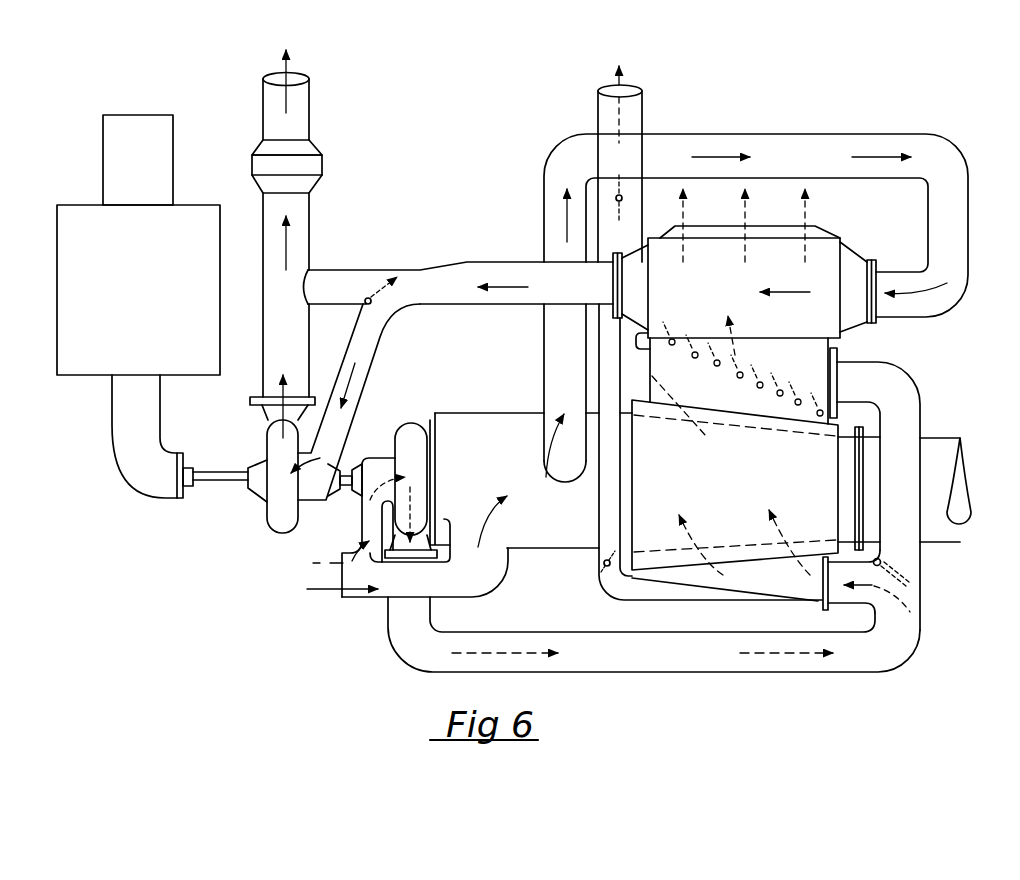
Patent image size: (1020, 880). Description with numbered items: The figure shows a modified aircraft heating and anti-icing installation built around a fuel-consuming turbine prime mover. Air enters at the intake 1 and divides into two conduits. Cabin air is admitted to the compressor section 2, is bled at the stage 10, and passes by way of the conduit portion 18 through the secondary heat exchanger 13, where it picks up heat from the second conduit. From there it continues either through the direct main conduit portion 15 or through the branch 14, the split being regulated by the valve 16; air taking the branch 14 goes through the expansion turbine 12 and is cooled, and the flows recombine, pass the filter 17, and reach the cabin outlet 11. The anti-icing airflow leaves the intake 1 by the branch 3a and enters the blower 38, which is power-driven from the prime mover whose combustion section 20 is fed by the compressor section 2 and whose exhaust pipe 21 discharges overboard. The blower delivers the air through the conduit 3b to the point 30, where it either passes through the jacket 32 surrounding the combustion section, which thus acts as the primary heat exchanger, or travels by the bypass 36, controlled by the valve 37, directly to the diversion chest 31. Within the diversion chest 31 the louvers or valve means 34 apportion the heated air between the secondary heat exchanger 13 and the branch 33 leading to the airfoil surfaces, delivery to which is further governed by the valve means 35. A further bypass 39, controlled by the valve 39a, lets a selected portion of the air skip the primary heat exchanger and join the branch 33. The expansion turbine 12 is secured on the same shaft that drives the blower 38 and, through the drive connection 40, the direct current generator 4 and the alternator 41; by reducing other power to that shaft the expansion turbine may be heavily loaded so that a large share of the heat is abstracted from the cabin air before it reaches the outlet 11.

The intake 1 is at (345, 592).
The compressor section 2 is at (482, 457).
The branch 3a is at (362, 533).
The conduit 3b is at (712, 673).
The direct current generator 4 is at (117, 284).
The bleed stage 10 is at (563, 478).
The outlet 11 is at (312, 103).
The expansion turbine 12 is at (275, 500).
The secondary heat exchanger 13 is at (735, 286).
The by-pass 14 is at (363, 382).
The main conduit portion 15 is at (343, 268).
The valve 16 is at (390, 273).
The filter 17 is at (317, 166).
The conduit portion 18 is at (544, 365).
The combustion section 20 is at (687, 552).
The exhaust pipe 21 is at (963, 525).
The section of second conduit 30 is at (855, 598).
The diversion chest 31 is at (736, 376).
The jacket 32 is at (725, 485).
The branch 33 is at (633, 110).
The louvers or valve means 34 is at (797, 397).
The valve means 35 is at (624, 205).
The bypass 36 is at (905, 395).
The valve 37 is at (908, 583).
The blower 38 is at (408, 430).
The bypass 39 is at (604, 520).
The valve 39a is at (600, 573).
The drive connection 40 is at (135, 480).
The alternator 41 is at (125, 117).